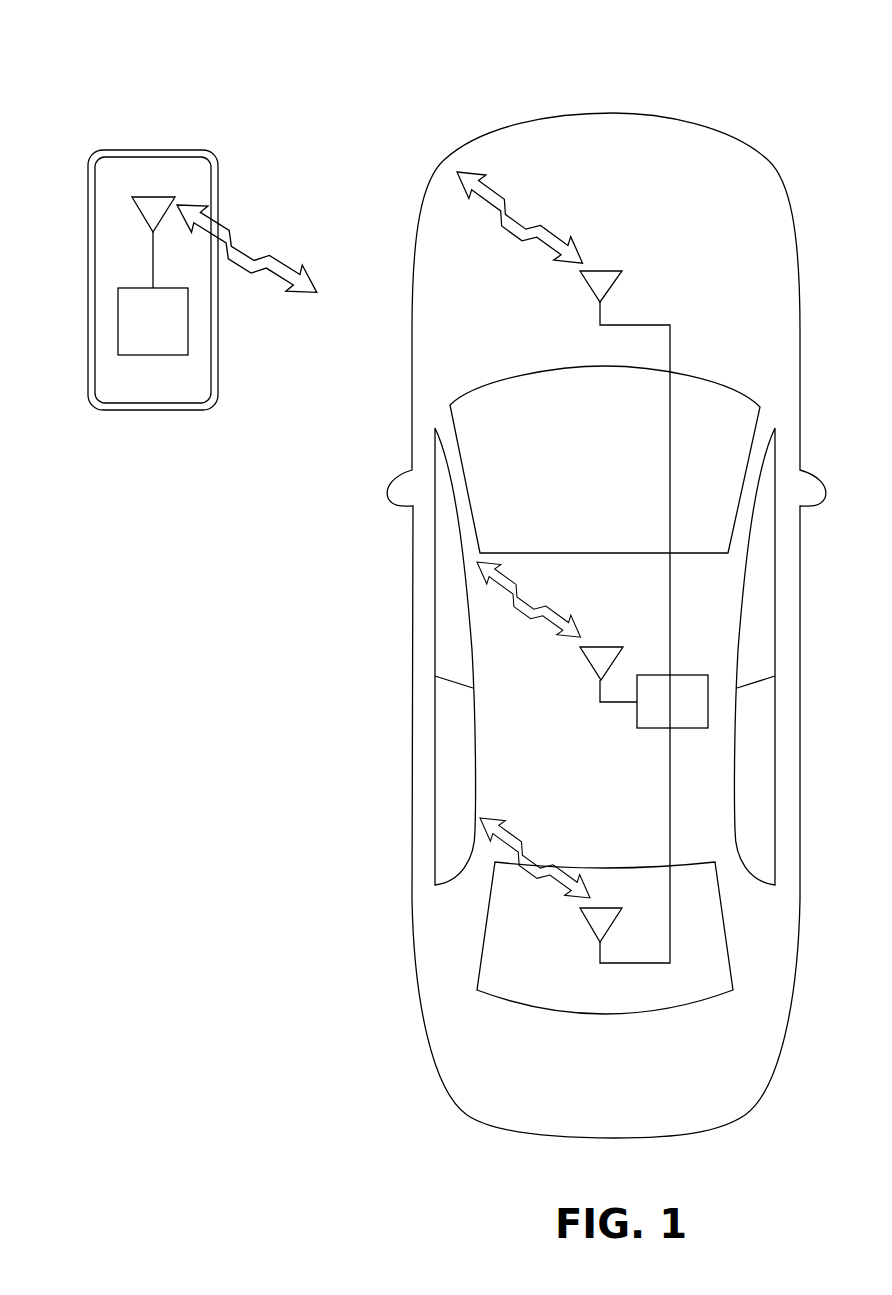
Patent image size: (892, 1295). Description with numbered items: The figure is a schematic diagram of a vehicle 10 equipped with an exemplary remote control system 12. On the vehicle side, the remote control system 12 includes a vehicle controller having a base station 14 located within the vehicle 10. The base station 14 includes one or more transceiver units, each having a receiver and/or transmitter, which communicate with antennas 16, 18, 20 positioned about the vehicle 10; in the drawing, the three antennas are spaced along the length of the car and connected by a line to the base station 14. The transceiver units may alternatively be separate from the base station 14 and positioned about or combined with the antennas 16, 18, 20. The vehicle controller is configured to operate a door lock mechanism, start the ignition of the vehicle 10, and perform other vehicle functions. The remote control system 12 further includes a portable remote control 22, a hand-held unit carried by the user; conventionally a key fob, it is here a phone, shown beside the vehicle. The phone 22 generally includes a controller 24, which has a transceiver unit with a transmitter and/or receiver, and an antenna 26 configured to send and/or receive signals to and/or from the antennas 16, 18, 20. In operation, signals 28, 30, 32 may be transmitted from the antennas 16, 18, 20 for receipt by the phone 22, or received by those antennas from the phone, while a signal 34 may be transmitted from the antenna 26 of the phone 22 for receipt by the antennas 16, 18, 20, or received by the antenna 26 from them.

The vehicle 10 is at (648, 110).
The remote control system 12 is at (415, 80).
The base station 14 is at (656, 732).
The antenna 16 is at (604, 268).
The antenna 18 is at (588, 645).
The antenna 20 is at (597, 907).
The portable remote control 22 is at (153, 148).
The controller 24 is at (118, 322).
The antenna 26 is at (140, 215).
The signal 28 is at (540, 200).
The signal 30 is at (548, 585).
The signal 32 is at (558, 845).
The signal 34 is at (263, 240).